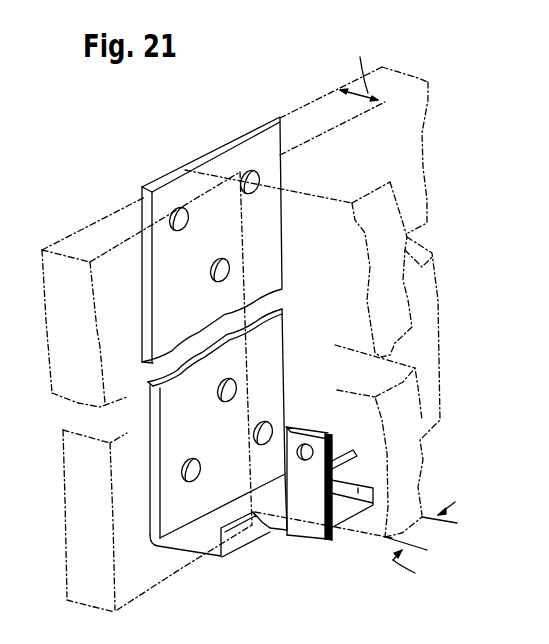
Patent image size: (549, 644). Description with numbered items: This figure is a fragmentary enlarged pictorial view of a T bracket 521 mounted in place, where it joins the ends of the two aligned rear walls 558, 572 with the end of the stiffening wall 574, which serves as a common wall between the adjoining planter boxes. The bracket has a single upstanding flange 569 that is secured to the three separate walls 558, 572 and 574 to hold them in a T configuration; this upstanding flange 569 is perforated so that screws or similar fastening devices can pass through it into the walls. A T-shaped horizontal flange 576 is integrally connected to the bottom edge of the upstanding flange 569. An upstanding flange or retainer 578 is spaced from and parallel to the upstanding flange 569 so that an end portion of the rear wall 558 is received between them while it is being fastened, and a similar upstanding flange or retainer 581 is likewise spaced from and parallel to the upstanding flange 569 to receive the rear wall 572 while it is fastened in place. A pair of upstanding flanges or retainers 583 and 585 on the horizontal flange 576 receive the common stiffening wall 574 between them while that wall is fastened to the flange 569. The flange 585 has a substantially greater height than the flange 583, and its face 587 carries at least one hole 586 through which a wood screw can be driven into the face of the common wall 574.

The T bracket 521 is at (220, 327).
The upstanding flange 569 is at (176, 168).
The rear wall 572 is at (85, 247).
The rear wall 558 is at (320, 113).
The stiffening wall 574 is at (333, 177).
The hole 586 is at (370, 486).
The upstanding flange or retainer 578 is at (351, 474).
The upstanding flange or retainer 583 is at (360, 481).
The face 587 is at (338, 534).
The upstanding flange or retainer 585 is at (302, 536).
The T-shaped horizontal flange 576 is at (226, 563).
The upstanding flange or retainer 581 is at (243, 530).